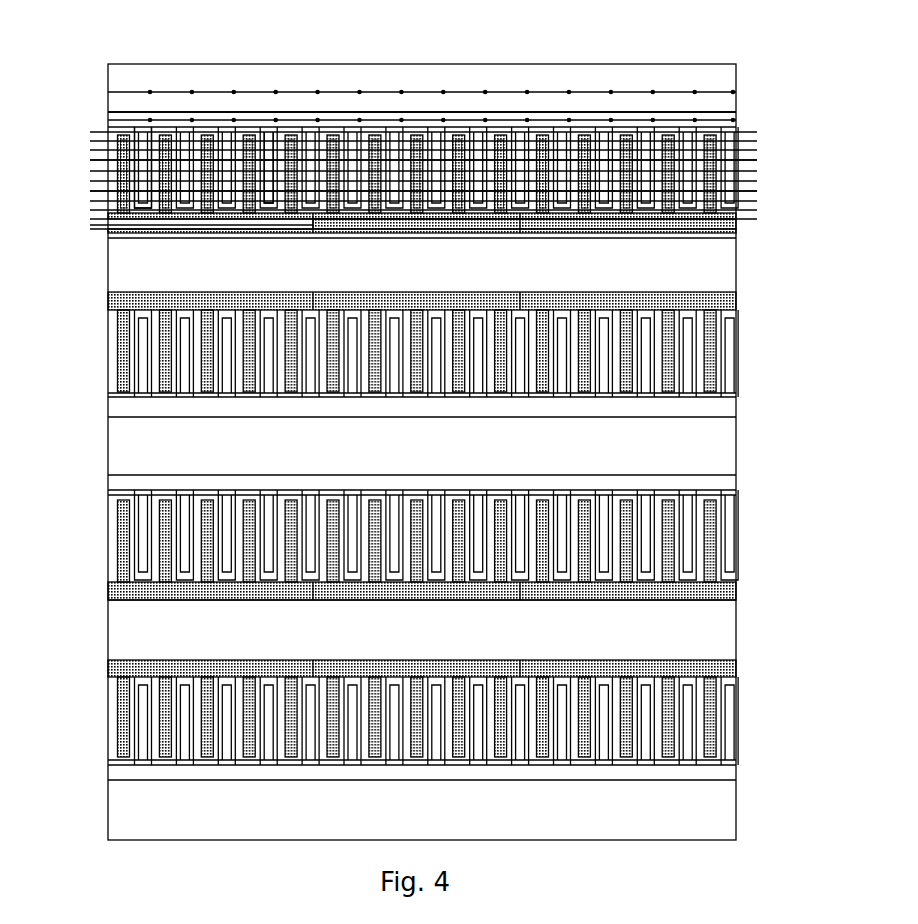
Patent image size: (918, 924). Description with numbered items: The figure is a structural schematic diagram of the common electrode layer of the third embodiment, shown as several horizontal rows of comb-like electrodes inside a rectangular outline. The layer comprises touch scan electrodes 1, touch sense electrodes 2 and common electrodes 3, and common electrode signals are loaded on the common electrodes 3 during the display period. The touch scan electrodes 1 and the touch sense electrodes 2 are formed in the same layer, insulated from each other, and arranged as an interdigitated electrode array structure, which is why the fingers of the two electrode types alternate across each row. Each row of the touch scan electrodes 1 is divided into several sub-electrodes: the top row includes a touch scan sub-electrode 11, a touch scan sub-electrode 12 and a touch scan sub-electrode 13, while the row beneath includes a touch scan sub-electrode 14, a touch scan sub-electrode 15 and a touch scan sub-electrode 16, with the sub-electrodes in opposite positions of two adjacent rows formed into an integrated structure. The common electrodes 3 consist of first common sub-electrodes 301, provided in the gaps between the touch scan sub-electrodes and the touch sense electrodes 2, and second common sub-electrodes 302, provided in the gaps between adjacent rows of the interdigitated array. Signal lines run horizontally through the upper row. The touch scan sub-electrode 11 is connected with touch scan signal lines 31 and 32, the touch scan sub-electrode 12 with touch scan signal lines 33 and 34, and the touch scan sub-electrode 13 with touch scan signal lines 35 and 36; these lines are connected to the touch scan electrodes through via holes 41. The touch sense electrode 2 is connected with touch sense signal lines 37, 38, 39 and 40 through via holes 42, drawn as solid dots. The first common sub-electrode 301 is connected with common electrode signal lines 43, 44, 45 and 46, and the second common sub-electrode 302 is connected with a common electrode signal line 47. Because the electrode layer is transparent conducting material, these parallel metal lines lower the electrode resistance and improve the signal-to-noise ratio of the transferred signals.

The touch scan electrode 1 is at (560, 36).
The touch sense electrode 2 is at (187, 128).
The common electrode 3 is at (203, 40).
The touch scan sub-electrode 11 is at (292, 138).
The touch scan sub-electrode 12 is at (417, 140).
The touch scan sub-electrode 13 is at (543, 140).
The touch scan sub-electrode 14 is at (167, 363).
The touch scan sub-electrode 15 is at (332, 358).
The touch scan sub-electrode 16 is at (543, 354).
The touch scan signal line 31 is at (93, 141).
The touch scan signal line 32 is at (93, 219).
The touch scan signal line 33 is at (93, 165).
The touch scan signal line 34 is at (93, 225).
The touch scan signal line 35 is at (93, 191).
The touch scan signal line 36 is at (107, 229).
The touch sense signal line 37 is at (736, 112).
The touch sense signal line 38 is at (750, 150).
The touch sense signal line 39 is at (750, 171).
The touch sense signal line 40 is at (750, 191).
The via hole 41 is at (135, 130).
The via hole 42 is at (149, 120).
The common electrode signal line 43 is at (748, 132).
The common electrode signal line 44 is at (750, 160).
The common electrode signal line 45 is at (750, 181).
The common electrode signal line 46 is at (750, 201).
The common electrode signal line 47 is at (736, 92).
The first common sub-electrode 301 is at (259, 132).
The second common sub-electrode 302 is at (217, 110).